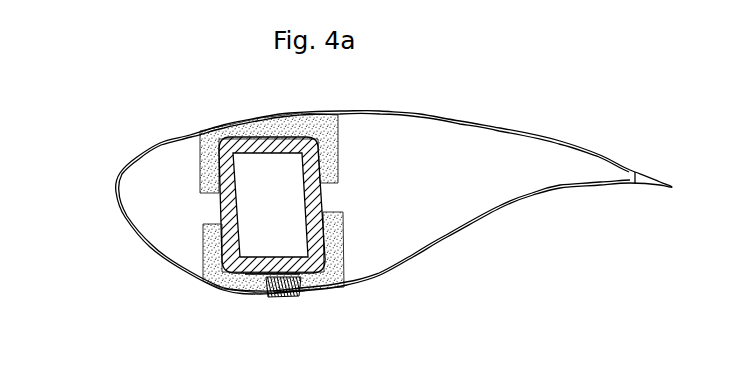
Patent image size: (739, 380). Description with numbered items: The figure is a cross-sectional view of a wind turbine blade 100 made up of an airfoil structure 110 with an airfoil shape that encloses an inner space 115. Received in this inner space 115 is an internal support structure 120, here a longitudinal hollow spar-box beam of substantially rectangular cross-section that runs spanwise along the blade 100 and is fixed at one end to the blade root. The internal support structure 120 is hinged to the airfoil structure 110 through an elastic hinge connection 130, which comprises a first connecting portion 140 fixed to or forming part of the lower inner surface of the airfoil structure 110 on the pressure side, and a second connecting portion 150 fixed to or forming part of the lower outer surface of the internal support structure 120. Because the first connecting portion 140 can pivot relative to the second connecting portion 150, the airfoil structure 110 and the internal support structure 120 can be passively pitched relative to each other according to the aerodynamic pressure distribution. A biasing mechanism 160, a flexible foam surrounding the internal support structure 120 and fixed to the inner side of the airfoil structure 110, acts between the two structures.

The wind turbine blade 100 is at (177, 123).
The airfoil structure 110 is at (463, 122).
The inner space 115 is at (517, 143).
The internal support structure 120 is at (225, 207).
The elastic hinge connection 130 is at (290, 293).
The first connecting portion 140 is at (272, 297).
The second connecting portion 150 is at (270, 276).
The biasing mechanism 160 is at (203, 172).